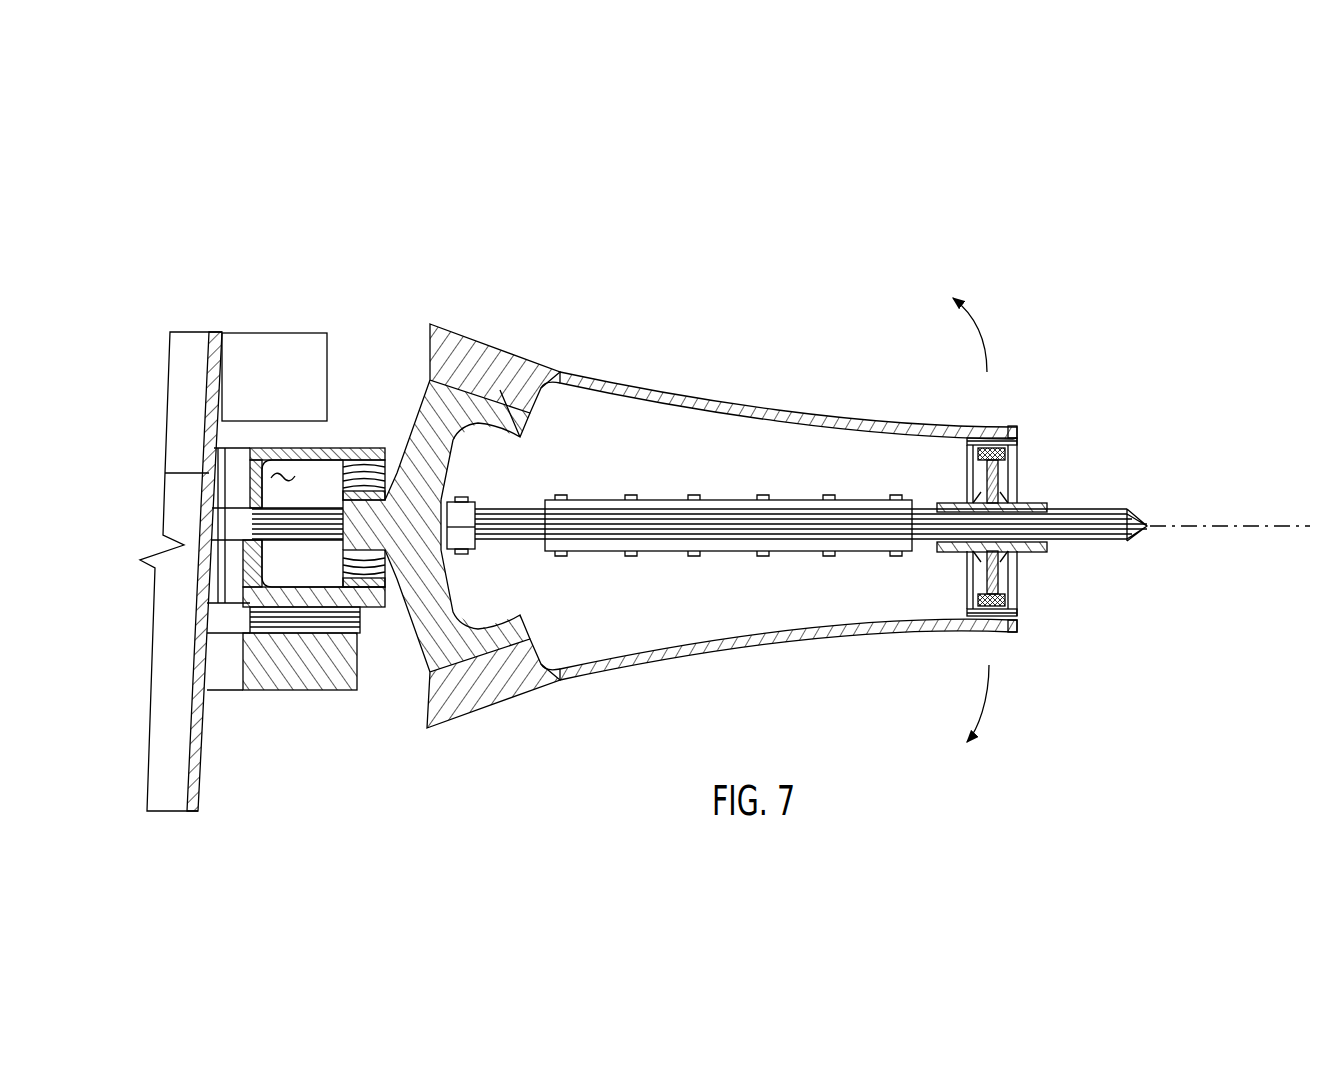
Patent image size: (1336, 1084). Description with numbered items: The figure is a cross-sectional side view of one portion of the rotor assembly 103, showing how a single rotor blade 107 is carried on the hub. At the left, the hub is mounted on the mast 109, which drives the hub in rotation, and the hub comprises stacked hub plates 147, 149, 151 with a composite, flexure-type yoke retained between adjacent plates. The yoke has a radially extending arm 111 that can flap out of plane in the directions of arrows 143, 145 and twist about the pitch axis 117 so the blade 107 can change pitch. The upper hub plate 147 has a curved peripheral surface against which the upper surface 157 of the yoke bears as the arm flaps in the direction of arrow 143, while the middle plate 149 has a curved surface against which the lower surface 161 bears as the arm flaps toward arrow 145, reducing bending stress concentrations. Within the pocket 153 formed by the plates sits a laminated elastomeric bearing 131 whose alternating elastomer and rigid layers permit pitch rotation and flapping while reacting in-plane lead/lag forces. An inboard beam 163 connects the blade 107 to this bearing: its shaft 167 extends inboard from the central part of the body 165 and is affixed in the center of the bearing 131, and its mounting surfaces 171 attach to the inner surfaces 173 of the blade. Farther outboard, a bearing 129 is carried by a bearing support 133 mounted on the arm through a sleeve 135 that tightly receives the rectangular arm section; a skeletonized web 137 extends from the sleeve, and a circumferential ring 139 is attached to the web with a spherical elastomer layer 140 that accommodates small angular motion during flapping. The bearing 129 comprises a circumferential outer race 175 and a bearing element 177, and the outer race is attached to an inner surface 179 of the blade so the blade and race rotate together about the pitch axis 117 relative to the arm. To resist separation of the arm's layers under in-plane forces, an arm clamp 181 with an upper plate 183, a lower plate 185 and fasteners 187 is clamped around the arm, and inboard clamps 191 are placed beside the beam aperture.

The rotor assembly 103 is at (214, 246).
The rotor blade 107 is at (757, 404).
The mast 109 is at (203, 757).
The arm 111 is at (1110, 543).
The pitch axis 117 is at (1205, 526).
The bearing 129 is at (1019, 618).
The bearing 131 is at (340, 462).
The bearing support 133 is at (983, 483).
The sleeve 135 is at (943, 548).
The skeletonized web 137 is at (995, 575).
The circumferential ring 139 is at (1013, 445).
The spherical elastomer layer 140 is at (1000, 459).
The arrow 143 is at (986, 338).
The arrow 145 is at (990, 676).
The upper hub plate 147 is at (255, 440).
The middle plate 149 is at (248, 572).
The hub plate 151 is at (312, 678).
The pocket 153 is at (290, 478).
The upper surface 157 is at (312, 505).
The lower surface 161 is at (305, 540).
The inboard beam 163 is at (420, 392).
The body 165 is at (418, 628).
The shaft 167 is at (378, 520).
The mounting surfaces 171 is at (488, 393).
The inner surfaces 173 is at (521, 438).
The outer race 175 is at (990, 438).
The bearing element 177 is at (1017, 430).
The inner surface 179 is at (942, 606).
The arm clamp 181 is at (650, 554).
The upper plate 183 is at (728, 505).
The lower plate 185 is at (713, 552).
The fasteners 187 is at (692, 498).
The inboard clamp 191 is at (480, 551).